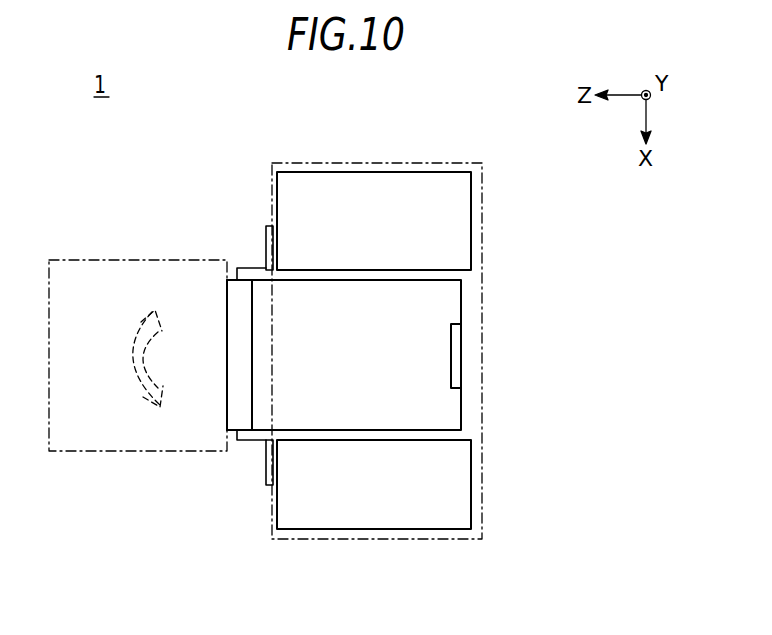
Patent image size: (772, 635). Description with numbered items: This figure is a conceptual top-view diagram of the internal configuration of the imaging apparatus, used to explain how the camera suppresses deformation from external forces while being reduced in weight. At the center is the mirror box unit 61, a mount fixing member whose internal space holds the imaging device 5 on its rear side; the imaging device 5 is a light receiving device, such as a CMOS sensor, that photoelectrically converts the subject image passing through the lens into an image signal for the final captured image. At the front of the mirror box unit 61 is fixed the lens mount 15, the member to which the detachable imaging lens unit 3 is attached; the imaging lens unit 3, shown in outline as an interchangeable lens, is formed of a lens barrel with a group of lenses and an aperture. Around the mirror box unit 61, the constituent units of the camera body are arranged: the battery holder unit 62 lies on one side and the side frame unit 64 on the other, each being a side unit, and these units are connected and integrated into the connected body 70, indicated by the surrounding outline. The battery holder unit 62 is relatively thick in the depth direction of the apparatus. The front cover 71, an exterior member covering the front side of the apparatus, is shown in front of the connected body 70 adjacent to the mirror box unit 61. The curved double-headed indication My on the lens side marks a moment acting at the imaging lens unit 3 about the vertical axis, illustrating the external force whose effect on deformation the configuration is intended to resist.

The imaging lens unit 3 is at (92, 260).
The imaging device 5 is at (451, 357).
The lens mount 15 is at (227, 397).
The mirror box unit 61 is at (461, 302).
The battery holder unit 62 is at (471, 213).
The side frame unit 64 is at (471, 487).
The connected body 70 is at (393, 540).
The front cover 71 is at (266, 239).
The moment about Y axis My is at (133, 353).